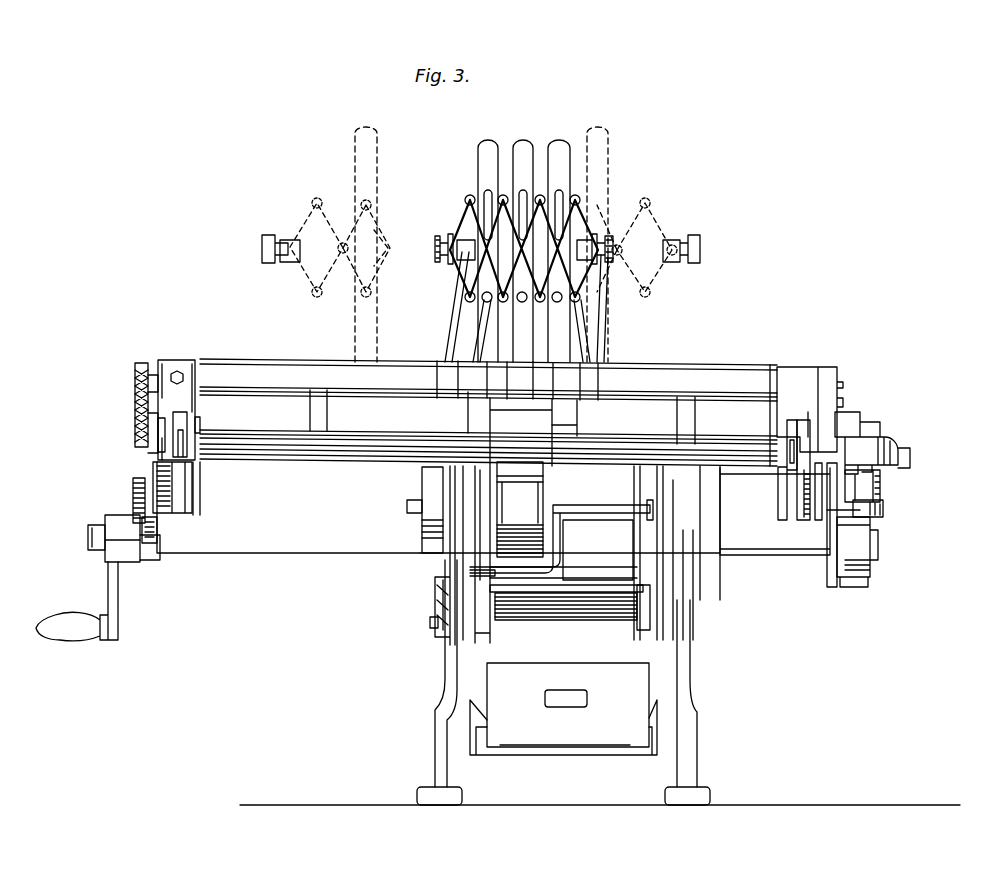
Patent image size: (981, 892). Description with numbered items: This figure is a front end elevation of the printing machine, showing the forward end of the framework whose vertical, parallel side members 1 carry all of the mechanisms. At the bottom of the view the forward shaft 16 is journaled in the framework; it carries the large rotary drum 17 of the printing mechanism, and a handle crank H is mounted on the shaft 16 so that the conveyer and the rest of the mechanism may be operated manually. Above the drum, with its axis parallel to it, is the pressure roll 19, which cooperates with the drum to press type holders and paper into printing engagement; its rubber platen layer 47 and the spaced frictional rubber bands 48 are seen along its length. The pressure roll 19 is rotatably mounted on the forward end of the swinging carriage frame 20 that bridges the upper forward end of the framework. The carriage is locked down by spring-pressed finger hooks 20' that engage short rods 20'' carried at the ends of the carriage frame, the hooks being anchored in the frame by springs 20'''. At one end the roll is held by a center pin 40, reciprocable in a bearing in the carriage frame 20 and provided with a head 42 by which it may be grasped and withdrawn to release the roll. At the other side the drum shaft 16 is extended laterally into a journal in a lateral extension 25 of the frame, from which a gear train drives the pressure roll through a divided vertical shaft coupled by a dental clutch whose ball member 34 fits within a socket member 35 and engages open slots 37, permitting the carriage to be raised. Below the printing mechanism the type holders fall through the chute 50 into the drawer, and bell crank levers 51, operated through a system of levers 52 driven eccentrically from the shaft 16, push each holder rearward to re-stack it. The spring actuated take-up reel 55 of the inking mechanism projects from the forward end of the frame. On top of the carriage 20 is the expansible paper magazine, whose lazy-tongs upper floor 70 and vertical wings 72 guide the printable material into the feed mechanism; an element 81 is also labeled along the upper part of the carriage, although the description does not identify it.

The side members 1 is at (437, 745).
The shaft 16 is at (95, 542).
The rotary drum 17 is at (573, 622).
The pressure roll 19 is at (737, 418).
The carriage frame 20 is at (482, 410).
The spring-pressed finger hooks 20' is at (772, 518).
The short rods 20'' is at (511, 454).
The springs 20''' is at (416, 534).
The lateral extension 25 is at (182, 553).
The ball member 34 is at (858, 500).
The socket member 35 is at (882, 485).
The open slots 37 is at (872, 536).
The center pin 40 is at (195, 425).
The head 42 is at (135, 409).
The layer of yielding substance 47 is at (521, 432).
The rubber bands 48 is at (577, 417).
The chute 50 is at (647, 637).
The bell crank levers 51 is at (490, 628).
The system of levers 52 is at (444, 630).
The take-up reel 55 is at (543, 496).
The upper floor 70 is at (487, 236).
The vertical wings 72 is at (447, 313).
The top rail 81 is at (721, 366).
The handle crank H is at (117, 596).